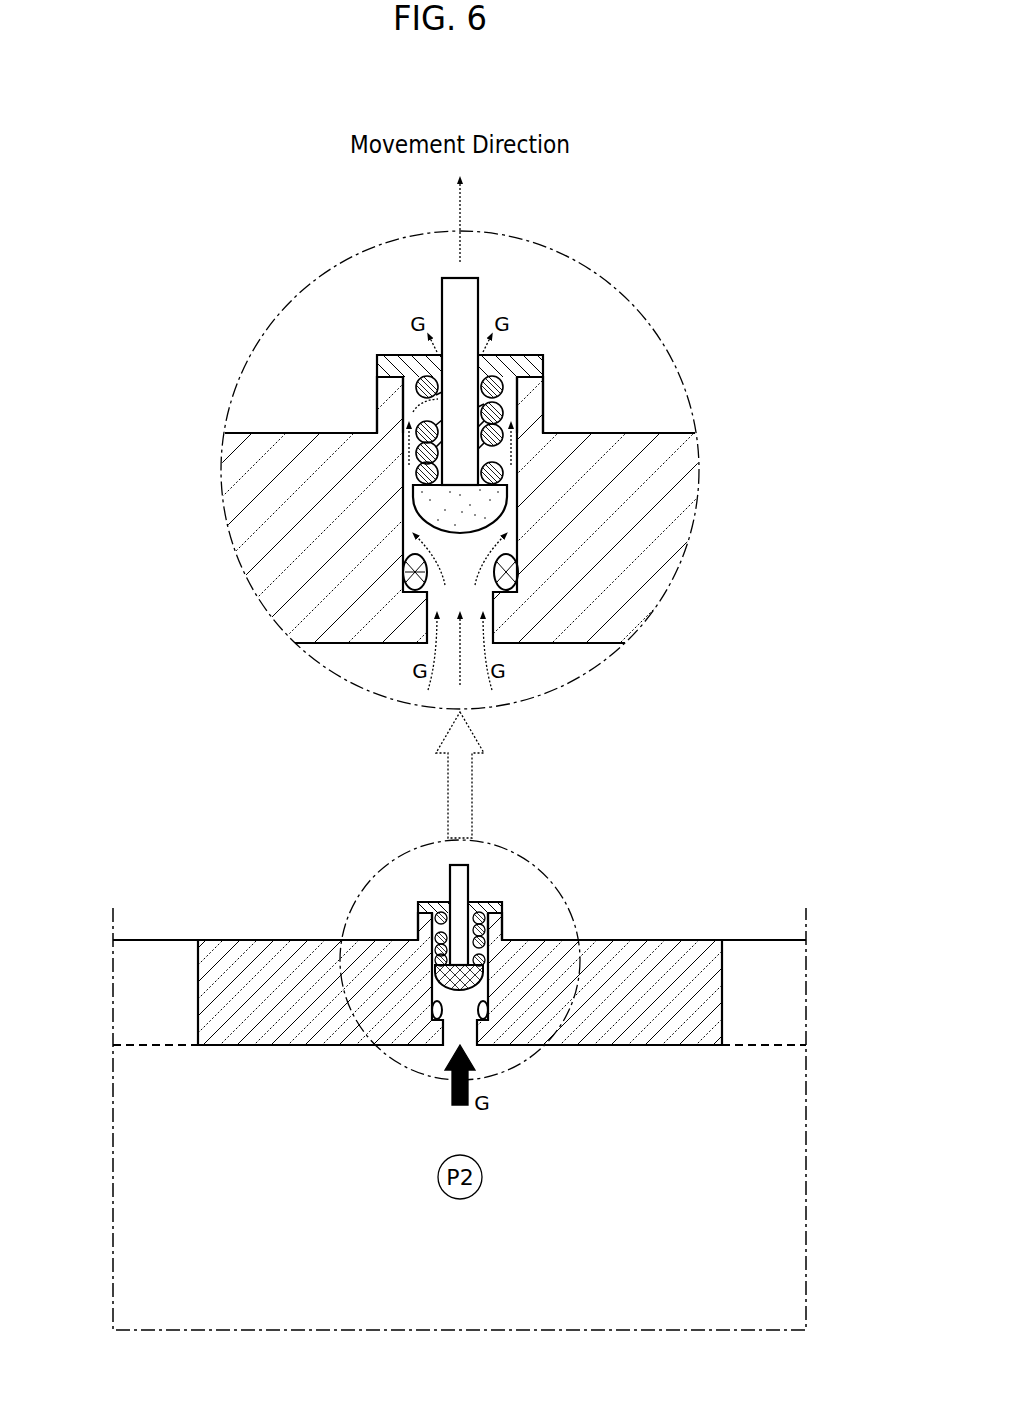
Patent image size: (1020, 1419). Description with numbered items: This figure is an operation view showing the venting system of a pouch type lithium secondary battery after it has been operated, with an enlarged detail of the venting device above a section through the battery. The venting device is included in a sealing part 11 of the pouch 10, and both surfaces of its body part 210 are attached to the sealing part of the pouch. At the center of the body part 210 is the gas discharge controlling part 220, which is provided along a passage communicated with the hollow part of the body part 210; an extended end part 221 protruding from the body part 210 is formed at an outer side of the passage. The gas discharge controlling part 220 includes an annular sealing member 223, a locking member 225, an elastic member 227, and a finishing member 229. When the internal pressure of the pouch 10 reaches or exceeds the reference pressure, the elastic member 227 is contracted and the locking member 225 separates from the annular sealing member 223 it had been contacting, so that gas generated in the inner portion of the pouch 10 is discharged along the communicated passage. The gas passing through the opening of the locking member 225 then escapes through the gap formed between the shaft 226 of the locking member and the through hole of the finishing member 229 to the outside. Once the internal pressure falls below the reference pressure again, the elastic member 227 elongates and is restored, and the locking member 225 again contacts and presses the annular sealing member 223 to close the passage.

The pouch 10 is at (446, 1281).
The sealing part 11 is at (167, 960).
The body part 210 is at (636, 444).
The gas discharge controlling part 220 is at (120, 353).
The extended end part 221 is at (392, 402).
The annular sealing member 223 is at (405, 565).
The locking member 225 is at (416, 496).
The shaft 226 is at (464, 300).
The elastic member 227 is at (424, 440).
The finishing member 229 is at (382, 368).